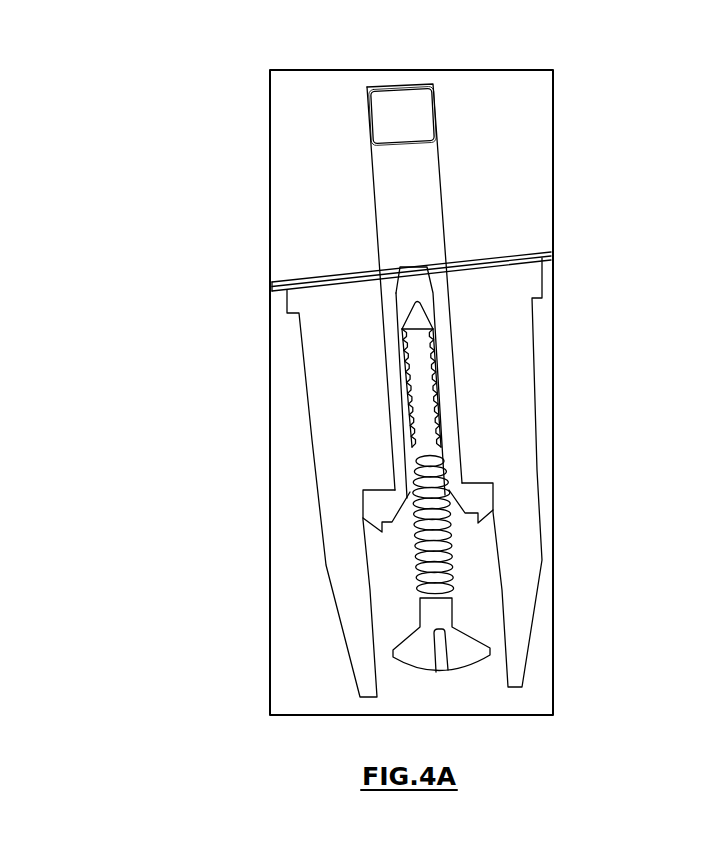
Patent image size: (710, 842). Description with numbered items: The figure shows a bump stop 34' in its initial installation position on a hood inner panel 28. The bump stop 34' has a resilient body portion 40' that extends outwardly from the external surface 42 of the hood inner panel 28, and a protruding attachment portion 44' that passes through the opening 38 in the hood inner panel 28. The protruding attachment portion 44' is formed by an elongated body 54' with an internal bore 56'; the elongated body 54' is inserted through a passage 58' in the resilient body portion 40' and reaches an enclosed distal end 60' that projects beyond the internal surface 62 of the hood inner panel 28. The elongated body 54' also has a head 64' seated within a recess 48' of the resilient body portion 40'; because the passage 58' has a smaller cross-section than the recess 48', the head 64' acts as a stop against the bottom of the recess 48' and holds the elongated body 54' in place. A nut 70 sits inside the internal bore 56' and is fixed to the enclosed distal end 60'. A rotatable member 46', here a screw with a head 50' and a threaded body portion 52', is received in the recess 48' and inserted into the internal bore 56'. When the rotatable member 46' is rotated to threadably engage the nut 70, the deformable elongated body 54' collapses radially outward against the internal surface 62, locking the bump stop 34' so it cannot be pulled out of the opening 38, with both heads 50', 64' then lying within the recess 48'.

The bump stop 34' is at (646, 427).
The opening 38 is at (553, 252).
The hood inner panel 28 is at (272, 288).
The internal surface 62 is at (282, 281).
The external surface 42 is at (282, 292).
The resilient body portion 40' is at (452, 477).
The protruding attachment portion 44' is at (444, 287).
The internal bore 56' is at (354, 210).
The nut 70 is at (388, 120).
The enclosed distal end 60' is at (418, 62).
The elongated body 54' is at (463, 382).
The passage 58' is at (305, 418).
The head 64' is at (386, 517).
The threaded body portion 52' is at (341, 448).
The rotatable member 46' is at (394, 634).
The head 50' is at (442, 671).
The recess 48' is at (545, 543).